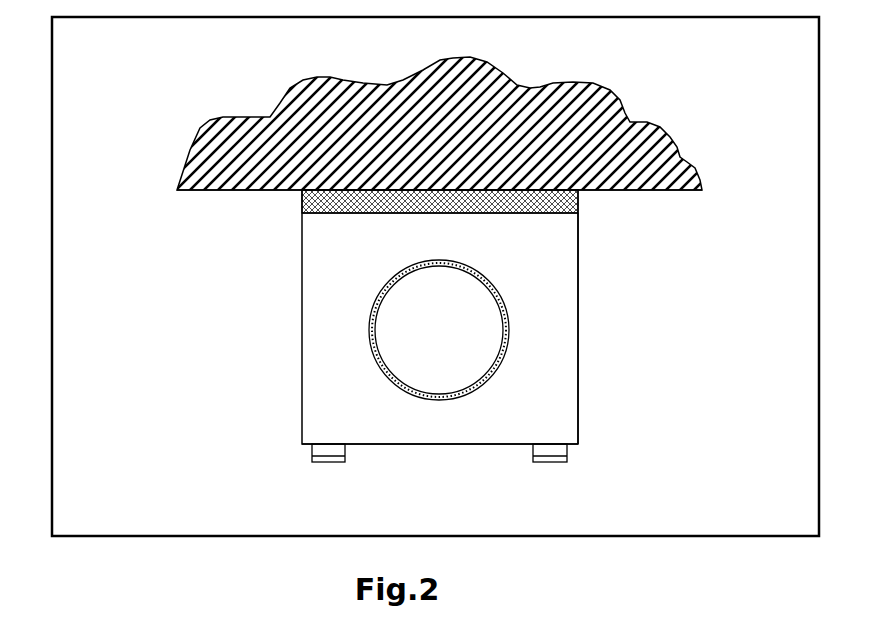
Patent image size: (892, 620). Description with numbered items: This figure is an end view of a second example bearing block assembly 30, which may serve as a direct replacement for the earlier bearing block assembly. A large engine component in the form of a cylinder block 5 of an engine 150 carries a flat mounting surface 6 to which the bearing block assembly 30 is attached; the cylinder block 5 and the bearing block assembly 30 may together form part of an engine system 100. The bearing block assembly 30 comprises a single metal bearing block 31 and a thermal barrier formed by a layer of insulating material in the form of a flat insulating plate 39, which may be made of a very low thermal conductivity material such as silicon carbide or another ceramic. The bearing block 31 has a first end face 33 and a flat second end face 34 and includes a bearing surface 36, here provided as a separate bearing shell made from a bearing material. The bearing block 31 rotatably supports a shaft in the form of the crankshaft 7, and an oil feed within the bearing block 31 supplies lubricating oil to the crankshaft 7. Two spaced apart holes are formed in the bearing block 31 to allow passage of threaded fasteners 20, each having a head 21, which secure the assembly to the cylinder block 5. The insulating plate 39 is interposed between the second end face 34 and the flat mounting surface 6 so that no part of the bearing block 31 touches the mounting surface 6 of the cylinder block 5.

The engine 150 is at (63, 17).
The engine system 100 is at (116, 104).
The cylinder block 5 is at (219, 108).
The flat mounting surface 6 is at (227, 190).
The bearing block assembly 30 is at (293, 325).
The second end face 34 is at (302, 203).
The flat insulating plate 39 is at (578, 201).
The bearing block 31 is at (578, 320).
The bearing surface 36 is at (378, 303).
The crankshaft 7 is at (377, 350).
The first end face 33 is at (415, 444).
The head 21 is at (345, 453).
The threaded fasteners 20 is at (320, 471).